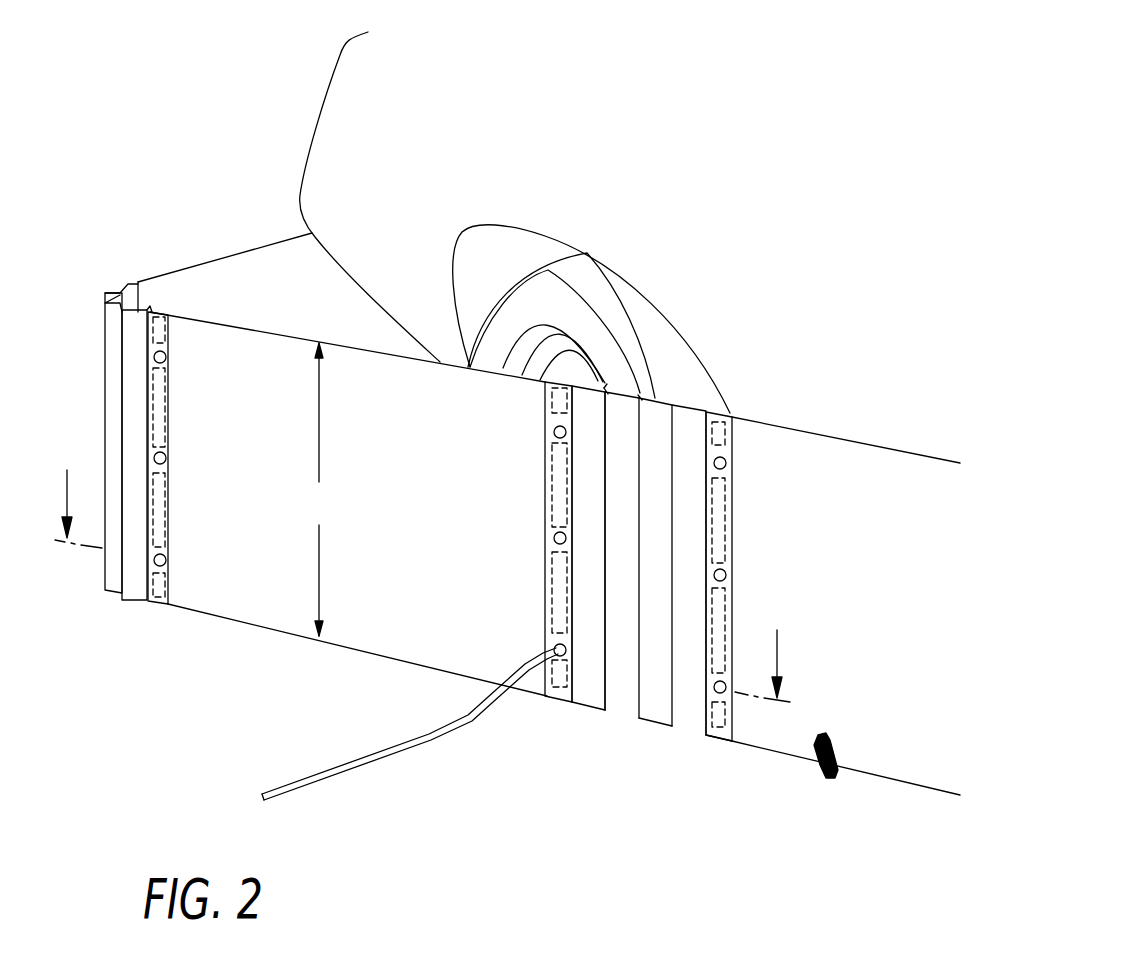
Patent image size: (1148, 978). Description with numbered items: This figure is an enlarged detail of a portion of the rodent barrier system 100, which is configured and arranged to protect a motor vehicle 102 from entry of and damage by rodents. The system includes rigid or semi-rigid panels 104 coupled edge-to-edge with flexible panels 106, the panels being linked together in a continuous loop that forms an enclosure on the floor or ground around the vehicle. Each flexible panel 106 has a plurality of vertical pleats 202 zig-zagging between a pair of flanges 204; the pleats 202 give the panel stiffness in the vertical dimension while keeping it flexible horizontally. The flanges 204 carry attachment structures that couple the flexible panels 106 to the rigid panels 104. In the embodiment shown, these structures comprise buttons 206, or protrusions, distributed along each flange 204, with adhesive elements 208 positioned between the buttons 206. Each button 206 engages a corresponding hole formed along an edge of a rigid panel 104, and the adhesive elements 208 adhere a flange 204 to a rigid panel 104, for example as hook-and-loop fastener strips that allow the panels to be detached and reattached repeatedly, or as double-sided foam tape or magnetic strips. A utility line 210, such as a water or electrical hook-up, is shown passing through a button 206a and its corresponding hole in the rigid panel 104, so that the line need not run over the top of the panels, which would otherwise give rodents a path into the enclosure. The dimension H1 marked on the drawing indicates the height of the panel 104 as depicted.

The rodent barrier system 100 is at (815, 130).
The motor vehicle 102 is at (338, 70).
The rigid panel 104 is at (230, 256).
The flexible panel 106 is at (135, 601).
The vertical pleat 202 is at (106, 335).
The flange 204 is at (472, 553).
The button 206 is at (166, 458).
The button 206a is at (555, 648).
The adhesive element 208 is at (168, 395).
The utility line 210 is at (424, 750).
The height H1 is at (316, 489).